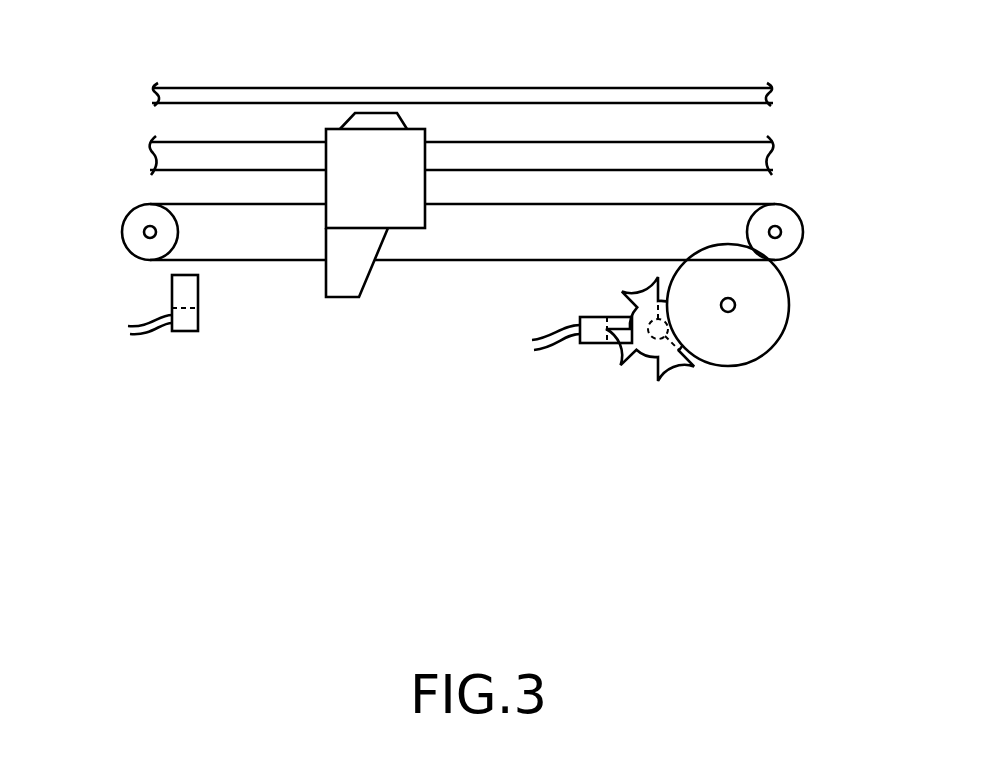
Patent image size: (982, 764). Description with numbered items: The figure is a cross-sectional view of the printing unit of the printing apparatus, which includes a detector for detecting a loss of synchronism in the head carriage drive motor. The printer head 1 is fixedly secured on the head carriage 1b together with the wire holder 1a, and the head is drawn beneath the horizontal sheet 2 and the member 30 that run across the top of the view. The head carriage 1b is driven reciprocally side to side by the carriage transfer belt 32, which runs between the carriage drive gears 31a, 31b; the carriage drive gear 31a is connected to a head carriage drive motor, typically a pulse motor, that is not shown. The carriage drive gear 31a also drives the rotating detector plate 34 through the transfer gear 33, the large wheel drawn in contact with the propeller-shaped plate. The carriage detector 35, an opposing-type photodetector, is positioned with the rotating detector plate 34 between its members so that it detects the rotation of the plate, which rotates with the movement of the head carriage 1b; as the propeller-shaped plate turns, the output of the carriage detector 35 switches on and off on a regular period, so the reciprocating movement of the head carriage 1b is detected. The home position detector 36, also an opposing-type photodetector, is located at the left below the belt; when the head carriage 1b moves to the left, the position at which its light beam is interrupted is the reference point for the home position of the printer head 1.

The printer head 1 is at (421, 213).
The wire holder 1a is at (370, 118).
The head carriage 1b is at (350, 290).
The sheet / material 2 is at (653, 93).
The table / sheet 30 is at (710, 150).
The carriage drive gear 31a is at (785, 235).
The carriage drive gear 31b is at (135, 233).
The carriage transfer belt 32 is at (722, 200).
The transfer gear 33 is at (755, 337).
The rotating detector plate 34 is at (672, 372).
The carriage detector 35 is at (590, 345).
The home position detector 36 is at (185, 325).